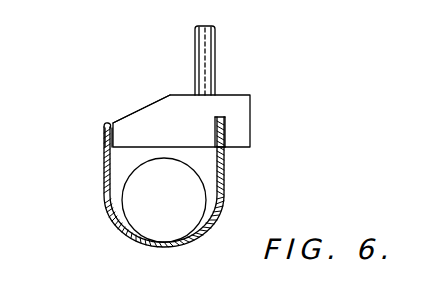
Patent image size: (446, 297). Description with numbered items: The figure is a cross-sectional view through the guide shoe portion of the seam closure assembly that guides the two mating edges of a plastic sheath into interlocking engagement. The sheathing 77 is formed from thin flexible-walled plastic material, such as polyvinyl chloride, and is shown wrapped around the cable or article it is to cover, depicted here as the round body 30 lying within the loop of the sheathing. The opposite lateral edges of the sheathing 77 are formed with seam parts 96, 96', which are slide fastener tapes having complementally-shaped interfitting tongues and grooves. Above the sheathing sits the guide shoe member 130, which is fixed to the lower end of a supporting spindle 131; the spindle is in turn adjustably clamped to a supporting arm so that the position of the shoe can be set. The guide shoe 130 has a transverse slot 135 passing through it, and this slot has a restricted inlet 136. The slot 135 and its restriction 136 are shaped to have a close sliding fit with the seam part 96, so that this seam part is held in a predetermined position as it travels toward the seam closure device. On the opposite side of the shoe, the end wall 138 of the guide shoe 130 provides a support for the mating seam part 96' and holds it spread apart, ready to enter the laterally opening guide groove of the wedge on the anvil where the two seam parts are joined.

The guide shoe member 130 is at (201, 97).
The supporting spindle 131 is at (177, 60).
The end wall 138 is at (141, 96).
The transverse slot 135 is at (190, 118).
The sheathing 77 is at (192, 182).
The seam part 96 is at (261, 132).
The seam part 96' is at (76, 135).
The restricted inlet 136 is at (256, 161).
The tube 30 is at (121, 200).